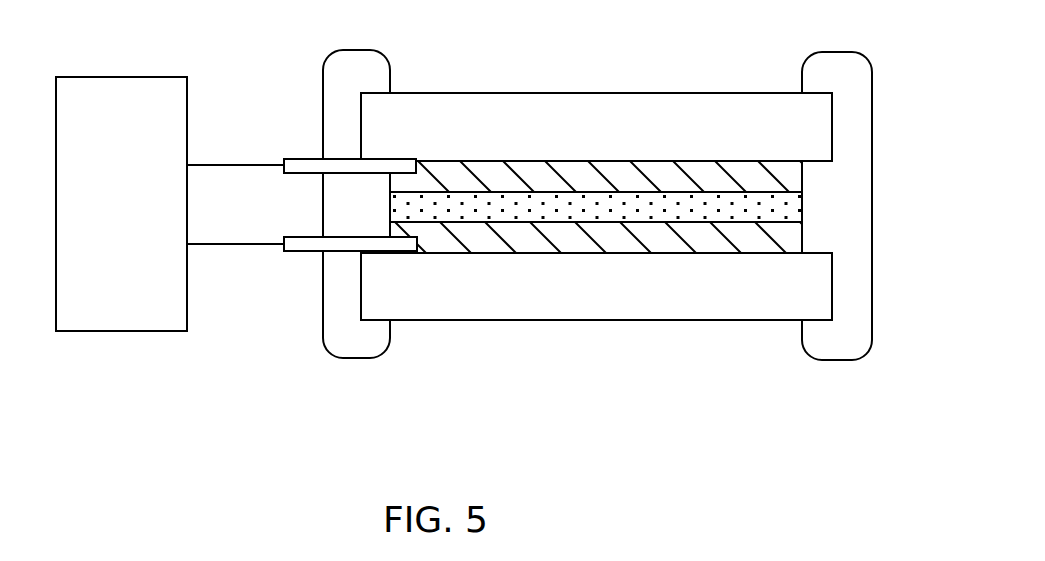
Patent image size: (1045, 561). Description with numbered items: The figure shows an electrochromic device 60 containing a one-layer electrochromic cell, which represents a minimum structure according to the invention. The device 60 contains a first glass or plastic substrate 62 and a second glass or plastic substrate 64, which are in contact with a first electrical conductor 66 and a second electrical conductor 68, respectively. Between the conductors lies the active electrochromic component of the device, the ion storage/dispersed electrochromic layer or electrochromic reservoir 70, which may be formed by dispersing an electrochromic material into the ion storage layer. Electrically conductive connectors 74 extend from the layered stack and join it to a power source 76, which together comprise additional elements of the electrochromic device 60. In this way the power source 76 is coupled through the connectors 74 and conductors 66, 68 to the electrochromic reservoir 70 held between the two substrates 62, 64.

The electrochromic device 60 is at (72, 408).
The first glass or plastic substrate 62 is at (450, 130).
The second glass or plastic substrate 64 is at (422, 293).
The first electrical conductor 66 is at (497, 175).
The second electrical conductor 68 is at (548, 243).
The electrochromic reservoir 70 is at (640, 208).
The electrically conductive connector 74 is at (295, 158).
The power source 76 is at (134, 78).